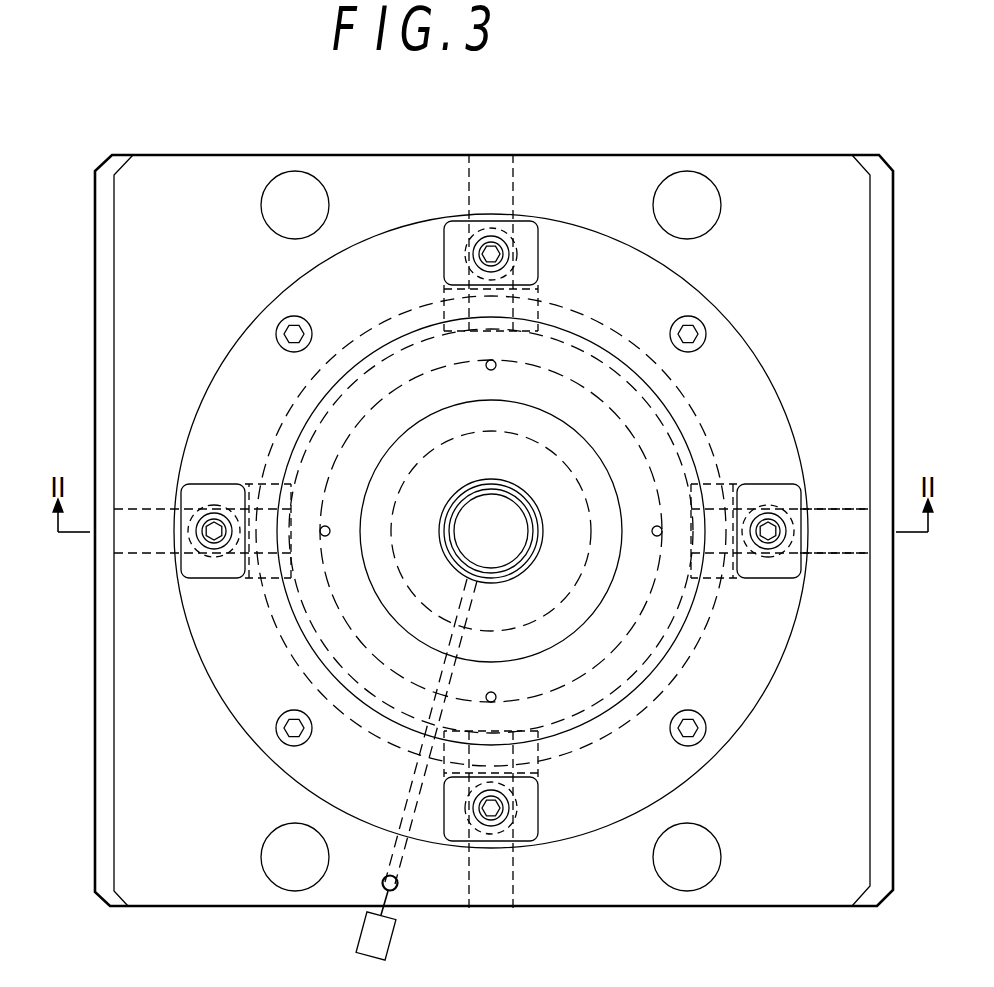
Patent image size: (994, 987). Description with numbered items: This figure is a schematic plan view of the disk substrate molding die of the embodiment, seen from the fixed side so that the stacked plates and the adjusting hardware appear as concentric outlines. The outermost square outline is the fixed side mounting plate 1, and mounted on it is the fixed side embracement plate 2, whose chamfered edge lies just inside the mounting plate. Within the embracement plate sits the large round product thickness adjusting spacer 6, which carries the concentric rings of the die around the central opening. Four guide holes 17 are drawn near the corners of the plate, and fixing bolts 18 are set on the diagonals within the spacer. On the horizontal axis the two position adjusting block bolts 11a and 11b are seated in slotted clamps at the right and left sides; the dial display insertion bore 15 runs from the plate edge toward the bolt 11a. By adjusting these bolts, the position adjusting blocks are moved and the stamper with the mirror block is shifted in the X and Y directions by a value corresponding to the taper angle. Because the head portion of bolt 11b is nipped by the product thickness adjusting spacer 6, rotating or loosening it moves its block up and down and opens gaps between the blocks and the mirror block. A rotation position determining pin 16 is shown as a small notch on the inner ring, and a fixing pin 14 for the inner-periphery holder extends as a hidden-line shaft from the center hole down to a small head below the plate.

The fixed side mounting plate 1 is at (873, 862).
The fixed side embracement plate 2 is at (745, 880).
The product thickness adjusting spacer 6 is at (618, 255).
The position adjusting block bolt 11a is at (782, 582).
The position adjusting block bolt 11b is at (185, 545).
The fixing pin 14 is at (395, 890).
The dial display insertion bore 15 is at (838, 522).
The rotation position determining pin 16 is at (325, 508).
The guide hole 17 is at (283, 182).
The fixing bolt 18 is at (692, 318).